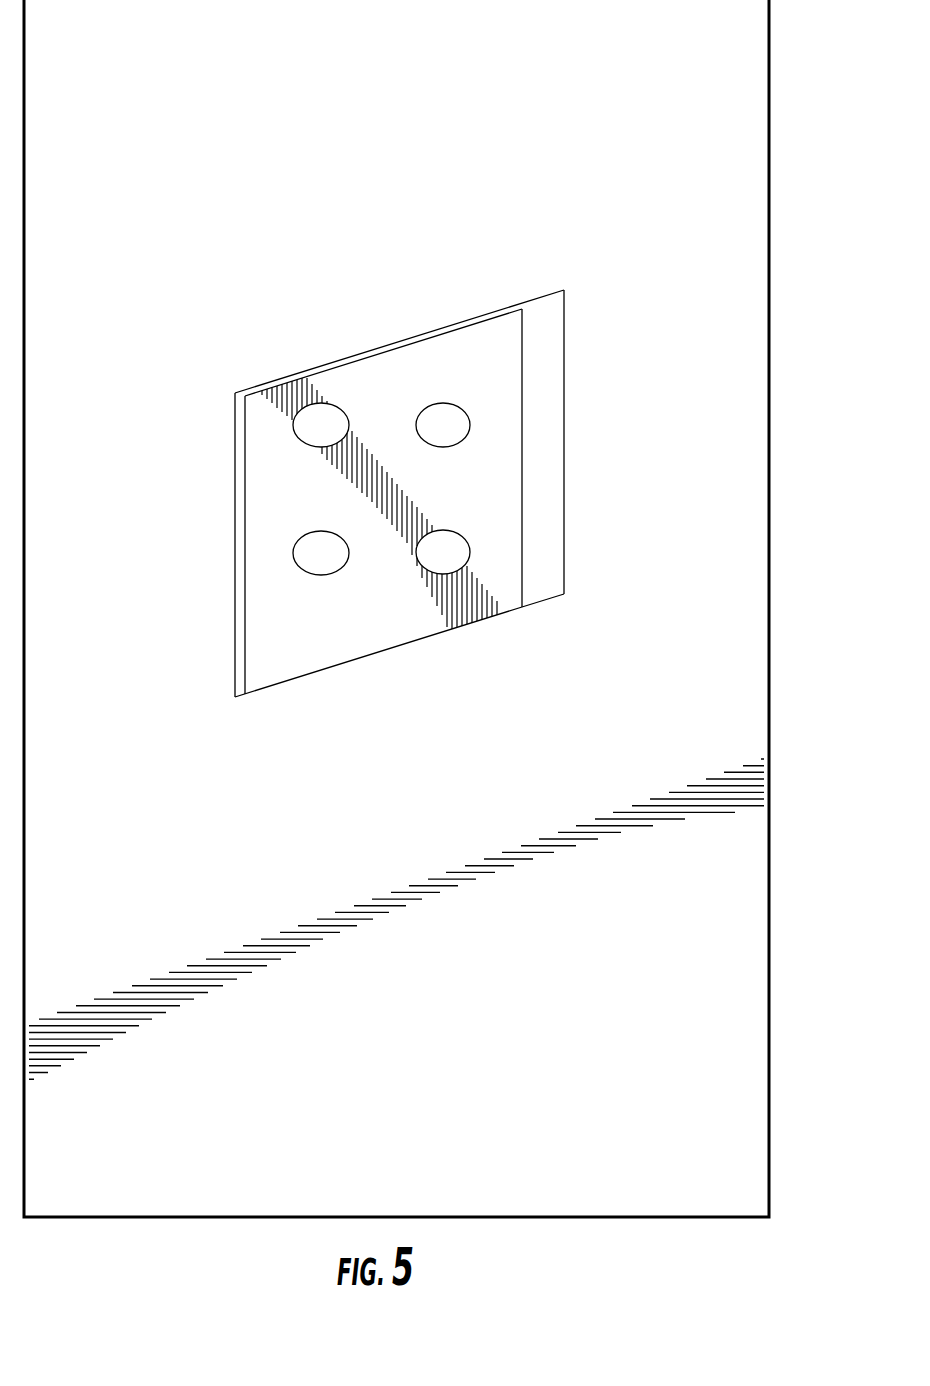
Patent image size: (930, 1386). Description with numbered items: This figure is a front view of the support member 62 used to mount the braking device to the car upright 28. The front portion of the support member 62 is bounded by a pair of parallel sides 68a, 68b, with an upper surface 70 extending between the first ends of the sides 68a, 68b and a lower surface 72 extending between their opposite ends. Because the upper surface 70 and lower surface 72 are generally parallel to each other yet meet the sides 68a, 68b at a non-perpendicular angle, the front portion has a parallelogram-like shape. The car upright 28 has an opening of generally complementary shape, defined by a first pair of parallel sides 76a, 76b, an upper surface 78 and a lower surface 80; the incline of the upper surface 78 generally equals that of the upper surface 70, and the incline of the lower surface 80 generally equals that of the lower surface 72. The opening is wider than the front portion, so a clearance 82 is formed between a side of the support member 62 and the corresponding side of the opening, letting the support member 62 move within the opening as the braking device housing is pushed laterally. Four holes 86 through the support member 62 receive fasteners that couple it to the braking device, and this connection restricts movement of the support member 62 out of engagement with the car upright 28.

The car upright 28 is at (733, 158).
The support member 62 is at (384, 482).
The upper surface 70 is at (343, 483).
The upper surface 78 is at (541, 296).
The clearance 82 is at (583, 448).
The first parallel side of opening 76a is at (566, 466).
The first parallel side of front portion 68a is at (522, 525).
The second parallel side of front portion 68b is at (184, 546).
The second parallel side of opening 76b is at (244, 578).
The lower surface 72 is at (399, 661).
The lower surface 80 is at (400, 644).
The holes 86 is at (434, 421).